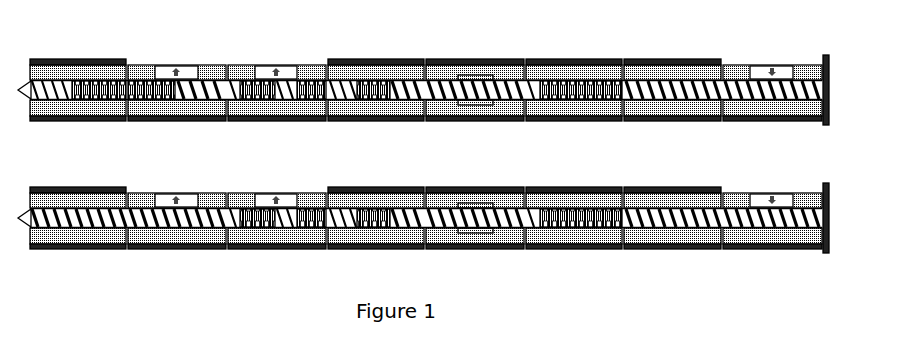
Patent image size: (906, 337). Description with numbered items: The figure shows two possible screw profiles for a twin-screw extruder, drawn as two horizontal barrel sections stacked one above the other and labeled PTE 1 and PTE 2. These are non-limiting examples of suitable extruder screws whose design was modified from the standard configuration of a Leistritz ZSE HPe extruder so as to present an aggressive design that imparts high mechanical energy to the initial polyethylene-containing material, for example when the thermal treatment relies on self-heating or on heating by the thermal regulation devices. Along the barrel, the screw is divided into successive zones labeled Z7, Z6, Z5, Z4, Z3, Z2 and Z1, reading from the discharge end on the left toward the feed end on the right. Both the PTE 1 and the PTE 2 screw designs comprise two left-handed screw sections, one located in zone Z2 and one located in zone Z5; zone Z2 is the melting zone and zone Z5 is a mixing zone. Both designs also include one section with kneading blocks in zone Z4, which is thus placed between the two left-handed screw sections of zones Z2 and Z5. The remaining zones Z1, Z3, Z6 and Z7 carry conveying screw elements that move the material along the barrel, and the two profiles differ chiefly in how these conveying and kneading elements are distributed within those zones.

The PTE1 screw design PTE 1 is at (423, 85).
The PTE2 screw design PTE 2 is at (423, 209).
The zone Z1 is at (672, 101).
The zone Z2 is at (574, 101).
The zone Z3 is at (475, 101).
The zone Z4 is at (376, 101).
The zone Z5 is at (277, 104).
The zone Z6 is at (177, 104).
The zone Z7 is at (78, 101).